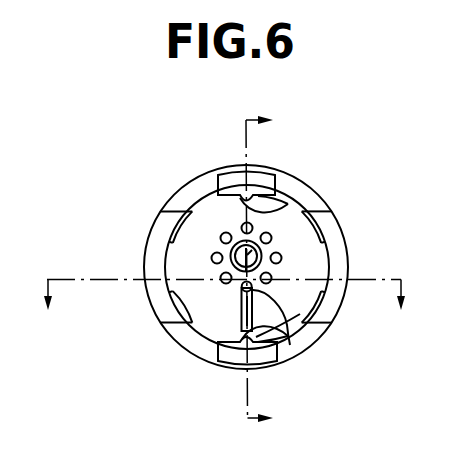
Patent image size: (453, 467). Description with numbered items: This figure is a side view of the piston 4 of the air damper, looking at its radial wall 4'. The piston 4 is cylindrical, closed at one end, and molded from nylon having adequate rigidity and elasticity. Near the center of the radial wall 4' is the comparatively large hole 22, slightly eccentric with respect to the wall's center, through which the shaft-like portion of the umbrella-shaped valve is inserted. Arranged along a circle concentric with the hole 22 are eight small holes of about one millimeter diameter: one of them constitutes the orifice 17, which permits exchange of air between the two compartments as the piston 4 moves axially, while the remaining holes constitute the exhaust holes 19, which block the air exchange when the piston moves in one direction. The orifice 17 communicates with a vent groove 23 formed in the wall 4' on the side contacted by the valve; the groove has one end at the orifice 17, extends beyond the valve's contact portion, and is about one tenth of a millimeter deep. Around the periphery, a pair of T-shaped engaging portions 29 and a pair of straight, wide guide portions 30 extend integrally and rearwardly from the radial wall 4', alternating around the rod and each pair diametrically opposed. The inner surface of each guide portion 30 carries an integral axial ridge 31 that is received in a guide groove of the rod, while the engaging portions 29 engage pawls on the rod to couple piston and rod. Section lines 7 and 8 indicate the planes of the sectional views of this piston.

The piston 4 is at (239, 240).
The radial wall 4' is at (225, 285).
The section line 7- 7 is at (272, 280).
The section line 8- 8 is at (222, 306).
The orifice 17 is at (291, 347).
The exhaust holes 19 is at (220, 277).
The hole 22 is at (259, 250).
The vent groove 23 is at (242, 325).
The T-shaped engaging portions 29 is at (152, 284).
The guide portions 30 is at (239, 183).
The ridge 31 is at (288, 204).